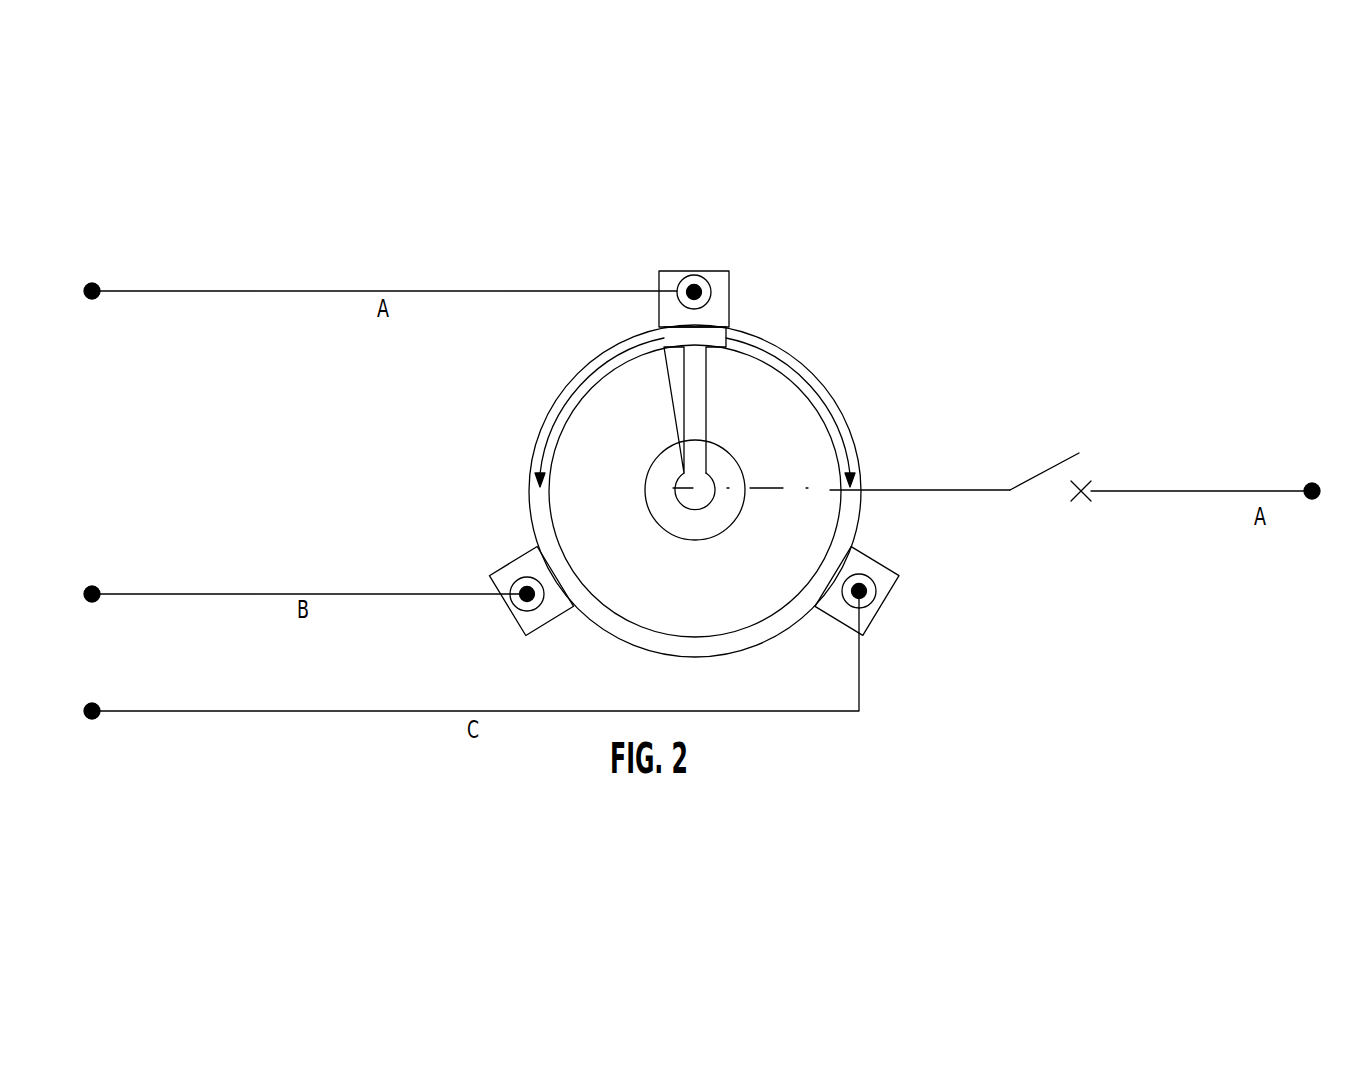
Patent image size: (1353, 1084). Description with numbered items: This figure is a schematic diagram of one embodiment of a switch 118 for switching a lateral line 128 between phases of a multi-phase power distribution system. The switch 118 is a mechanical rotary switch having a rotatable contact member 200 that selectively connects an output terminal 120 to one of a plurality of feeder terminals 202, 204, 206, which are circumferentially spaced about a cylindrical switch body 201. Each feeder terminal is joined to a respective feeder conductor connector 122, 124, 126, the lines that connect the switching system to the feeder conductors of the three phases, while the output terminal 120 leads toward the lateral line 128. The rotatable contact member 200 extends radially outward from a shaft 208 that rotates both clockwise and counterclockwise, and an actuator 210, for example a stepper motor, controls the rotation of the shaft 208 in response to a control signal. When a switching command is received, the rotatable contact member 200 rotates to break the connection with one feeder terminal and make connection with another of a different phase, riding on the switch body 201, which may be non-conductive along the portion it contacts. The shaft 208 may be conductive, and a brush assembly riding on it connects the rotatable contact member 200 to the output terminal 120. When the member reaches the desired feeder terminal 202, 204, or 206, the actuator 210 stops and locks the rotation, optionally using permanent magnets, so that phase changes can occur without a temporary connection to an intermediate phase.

The switch 118 is at (765, 348).
The output terminal 120 is at (928, 490).
The feeder conductor connector 122 is at (247, 291).
The feeder conductor connector 124 is at (247, 594).
The feeder conductor connector 126 is at (247, 711).
The lateral line 128 is at (1040, 474).
The rotatable contact member 200 is at (708, 406).
The cylindrical switch body 201 is at (565, 385).
The feeder terminal 202 is at (690, 268).
The feeder terminal 204 is at (523, 563).
The feeder terminal 206 is at (865, 567).
The shaft 208 is at (675, 488).
The actuator 210 is at (741, 470).